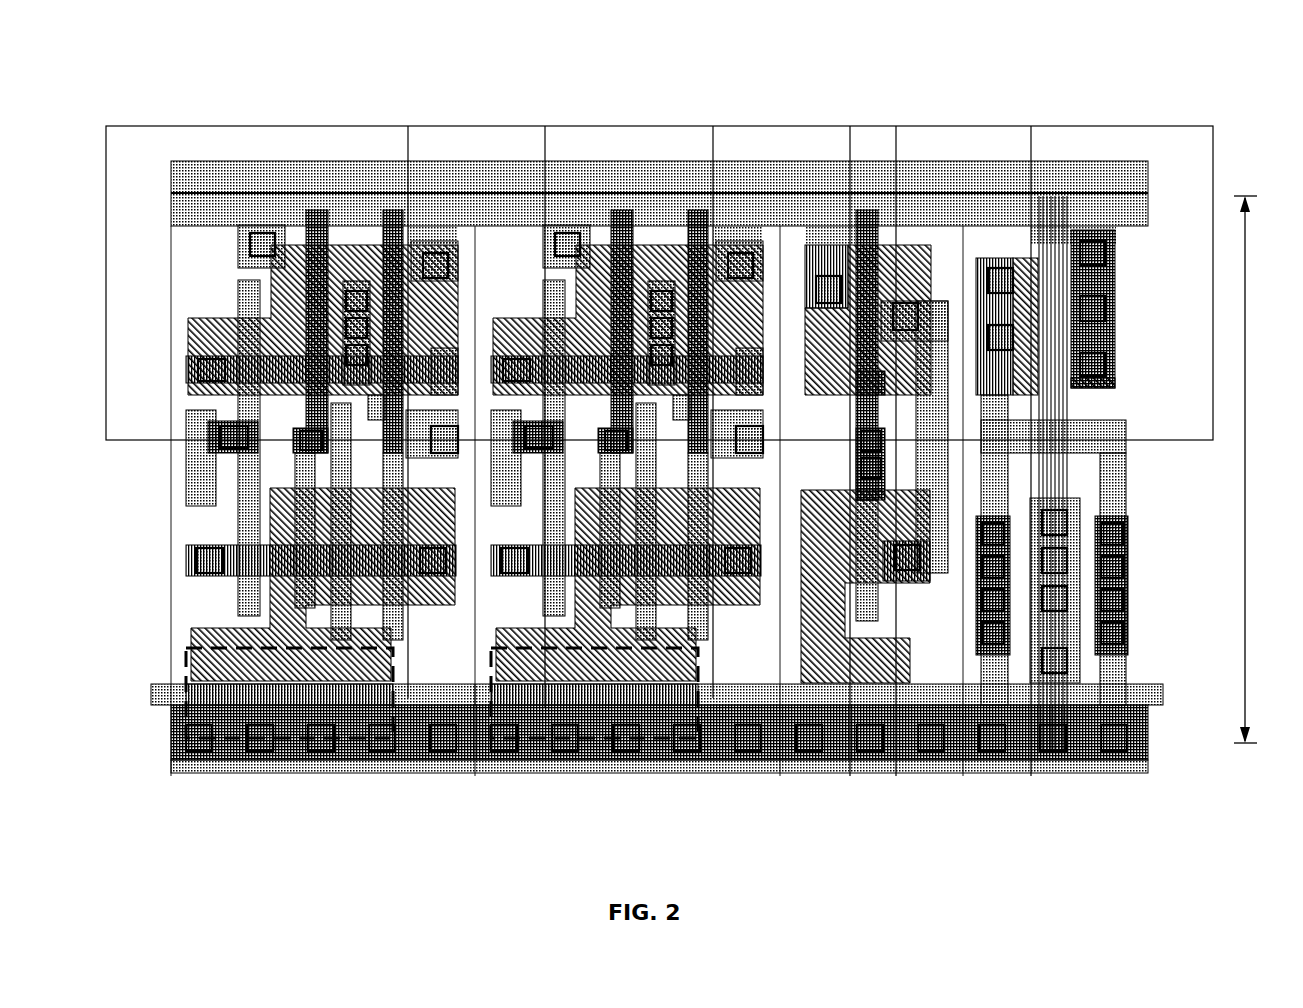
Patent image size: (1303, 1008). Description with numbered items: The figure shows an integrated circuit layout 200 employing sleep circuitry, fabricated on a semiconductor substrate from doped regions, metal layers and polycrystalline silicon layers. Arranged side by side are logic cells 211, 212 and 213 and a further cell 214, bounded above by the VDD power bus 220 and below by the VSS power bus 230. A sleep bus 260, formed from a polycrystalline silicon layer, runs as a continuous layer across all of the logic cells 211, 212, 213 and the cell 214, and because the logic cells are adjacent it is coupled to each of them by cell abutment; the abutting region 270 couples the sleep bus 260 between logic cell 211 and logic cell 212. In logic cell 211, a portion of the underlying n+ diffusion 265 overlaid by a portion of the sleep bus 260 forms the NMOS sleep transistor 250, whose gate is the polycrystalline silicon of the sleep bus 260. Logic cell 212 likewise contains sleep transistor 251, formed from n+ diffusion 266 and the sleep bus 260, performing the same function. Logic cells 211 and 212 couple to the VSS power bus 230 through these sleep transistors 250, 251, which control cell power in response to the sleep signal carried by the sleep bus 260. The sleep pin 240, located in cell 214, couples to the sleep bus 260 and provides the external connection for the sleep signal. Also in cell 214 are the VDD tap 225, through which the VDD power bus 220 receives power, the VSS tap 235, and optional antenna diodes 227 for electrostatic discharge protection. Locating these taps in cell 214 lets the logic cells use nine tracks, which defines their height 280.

The integrated circuit layout 200 is at (84, 70).
The logic cell 211 is at (468, 102).
The logic cell 212 is at (770, 102).
The logic cell 213 is at (955, 102).
The cell 214 is at (1084, 404).
The VDD power bus 220 is at (163, 190).
The VDD tap 225 is at (1108, 247).
The antenna diodes 227 is at (1003, 290).
The VSS power bus 230 is at (163, 722).
The VSS tap 235 is at (1050, 635).
The sleep pin 240 is at (1118, 475).
The sleep transistor 250 is at (290, 732).
The sleep transistor 251 is at (586, 732).
The sleep bus 260 is at (143, 686).
The n+ diffusion 265 is at (200, 658).
The n+ diffusion 266 is at (675, 655).
The abutting region 270 is at (462, 710).
The height 280 is at (1264, 469).